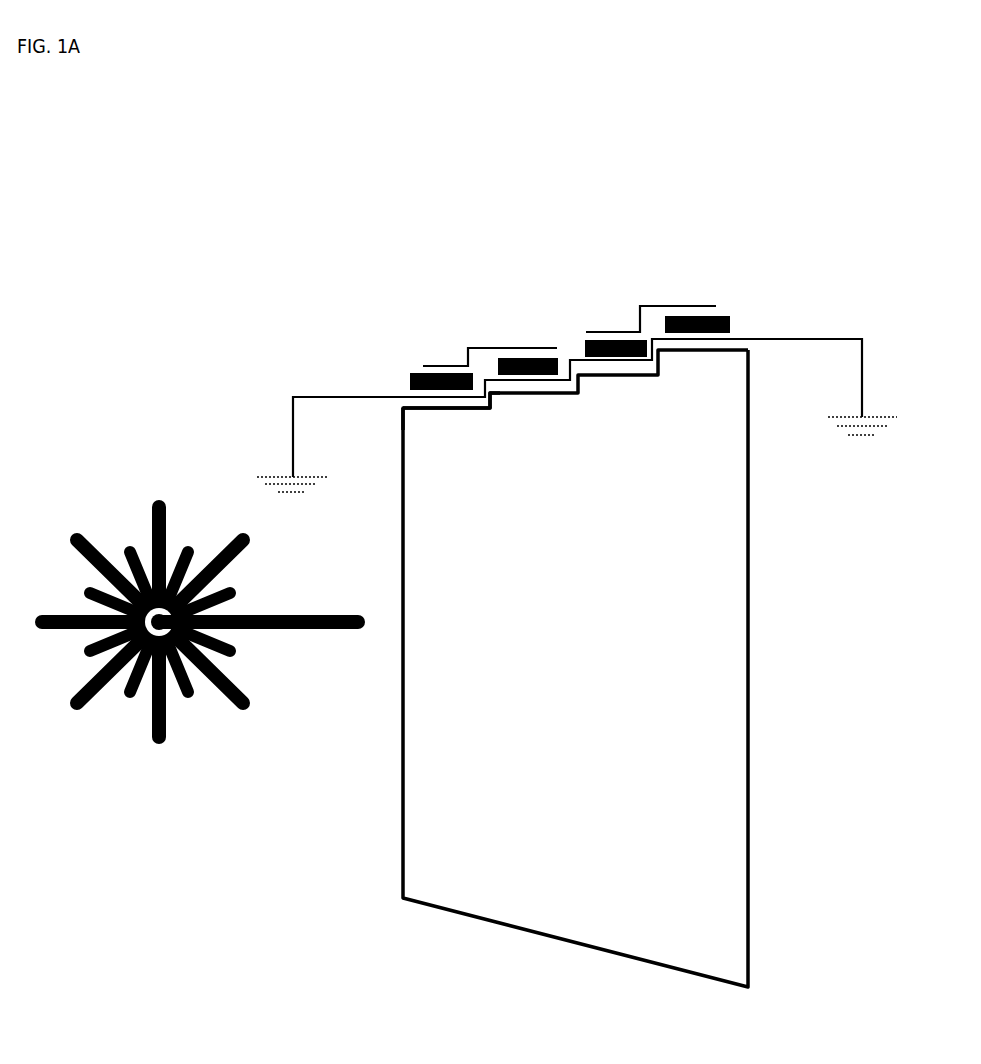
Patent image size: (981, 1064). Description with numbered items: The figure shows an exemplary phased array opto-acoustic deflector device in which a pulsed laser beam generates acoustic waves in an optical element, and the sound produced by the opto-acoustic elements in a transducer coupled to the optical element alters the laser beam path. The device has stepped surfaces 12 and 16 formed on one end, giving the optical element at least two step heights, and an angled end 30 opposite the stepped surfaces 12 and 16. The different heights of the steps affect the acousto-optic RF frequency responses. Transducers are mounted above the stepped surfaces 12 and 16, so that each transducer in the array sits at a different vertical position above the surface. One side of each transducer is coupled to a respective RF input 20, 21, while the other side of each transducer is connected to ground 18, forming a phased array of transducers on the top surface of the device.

The stepped surface 12 is at (462, 443).
The stepped surface 16 is at (575, 403).
The ground 18 is at (595, 404).
The RF input 20 is at (423, 366).
The RF input 21 is at (716, 306).
The angled end 30 is at (575, 690).